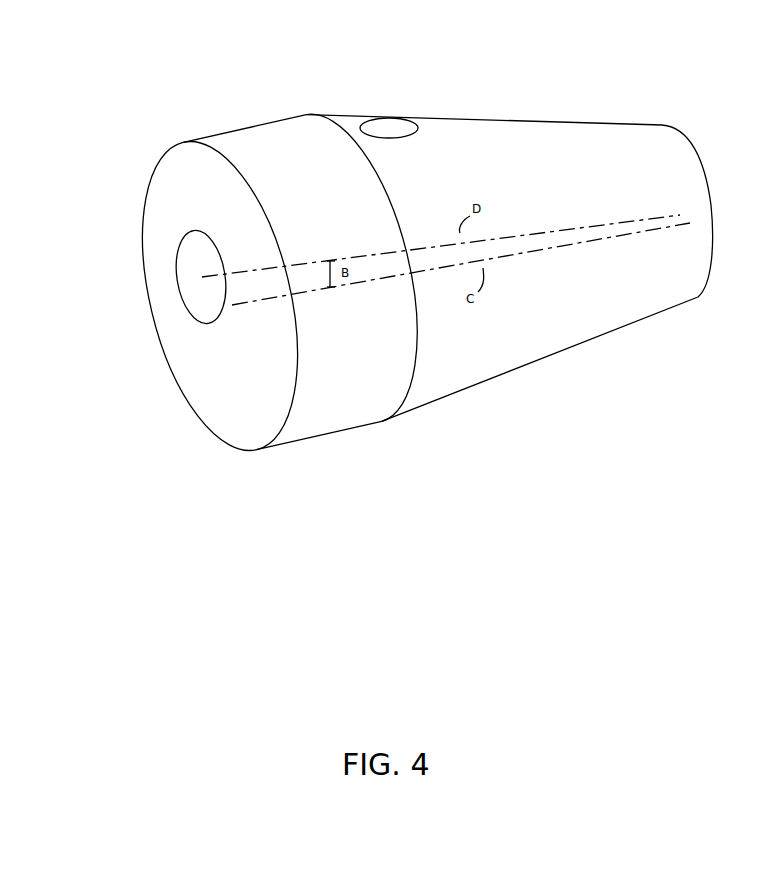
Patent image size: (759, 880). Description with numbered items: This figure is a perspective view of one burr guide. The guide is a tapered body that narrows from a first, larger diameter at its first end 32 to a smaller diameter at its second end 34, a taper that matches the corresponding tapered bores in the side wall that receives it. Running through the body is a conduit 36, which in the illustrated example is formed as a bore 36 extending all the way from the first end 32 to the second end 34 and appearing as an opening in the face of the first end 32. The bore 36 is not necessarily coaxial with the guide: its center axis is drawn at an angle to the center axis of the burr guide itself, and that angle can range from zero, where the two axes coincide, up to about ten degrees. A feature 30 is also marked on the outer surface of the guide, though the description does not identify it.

The marker tab 30 is at (401, 117).
The first end 32 is at (158, 163).
The second end 34 is at (587, 118).
The conduit 36 is at (181, 306).